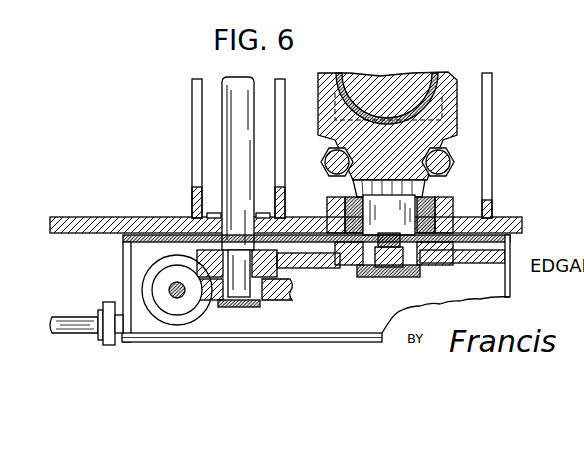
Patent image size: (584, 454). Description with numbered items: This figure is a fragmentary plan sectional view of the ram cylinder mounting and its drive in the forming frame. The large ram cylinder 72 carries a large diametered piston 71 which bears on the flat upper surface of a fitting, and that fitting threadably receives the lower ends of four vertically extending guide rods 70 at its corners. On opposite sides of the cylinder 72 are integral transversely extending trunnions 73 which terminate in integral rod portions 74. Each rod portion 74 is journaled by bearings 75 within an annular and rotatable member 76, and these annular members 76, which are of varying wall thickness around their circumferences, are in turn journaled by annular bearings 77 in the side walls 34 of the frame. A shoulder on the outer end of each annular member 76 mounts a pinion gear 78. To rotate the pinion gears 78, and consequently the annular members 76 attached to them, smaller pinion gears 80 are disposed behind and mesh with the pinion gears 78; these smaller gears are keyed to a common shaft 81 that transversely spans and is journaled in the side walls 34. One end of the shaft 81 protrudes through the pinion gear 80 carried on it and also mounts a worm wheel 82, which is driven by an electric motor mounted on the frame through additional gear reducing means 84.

The side walls 34 is at (122, 219).
The guide rods 70 is at (450, 157).
The piston 71 is at (409, 74).
The ram cylinder 72 is at (457, 78).
The trunnions 73 is at (400, 188).
The rod portions 74 is at (378, 222).
The bearings 75 is at (420, 193).
The annular and rotatable members 76 is at (325, 207).
The annular bearings 77 is at (456, 210).
The pinion gear 78 is at (499, 256).
The smaller pinion gears 80 is at (263, 310).
The common shaft 81 is at (234, 108).
The worm wheel 82 is at (176, 311).
The gear reducing means 84 is at (157, 281).